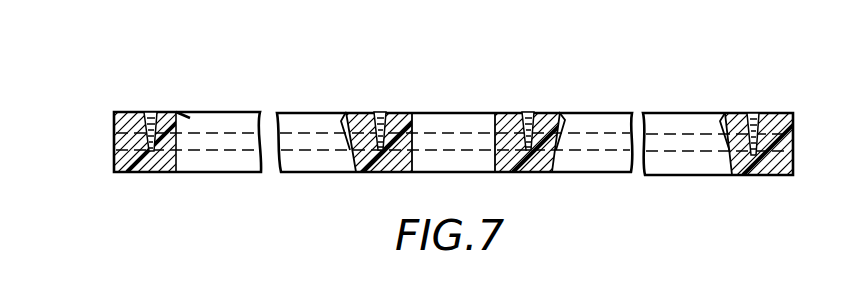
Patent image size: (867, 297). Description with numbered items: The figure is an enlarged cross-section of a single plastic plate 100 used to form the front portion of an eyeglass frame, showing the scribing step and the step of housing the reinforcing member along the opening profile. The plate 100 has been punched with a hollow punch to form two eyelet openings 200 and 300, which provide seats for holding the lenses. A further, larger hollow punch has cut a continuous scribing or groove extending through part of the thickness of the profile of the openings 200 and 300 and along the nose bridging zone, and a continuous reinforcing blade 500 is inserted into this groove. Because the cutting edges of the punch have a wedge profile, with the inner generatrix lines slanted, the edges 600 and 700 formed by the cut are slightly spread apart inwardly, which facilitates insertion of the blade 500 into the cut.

The plastic plate 100 is at (123, 148).
The eyelet opening 200 is at (235, 158).
The eyelet opening 300 is at (680, 163).
The reinforcing blade 500 is at (153, 112).
The edge formed by the cut 600 is at (350, 117).
The edge formed by the cut 700 is at (728, 115).